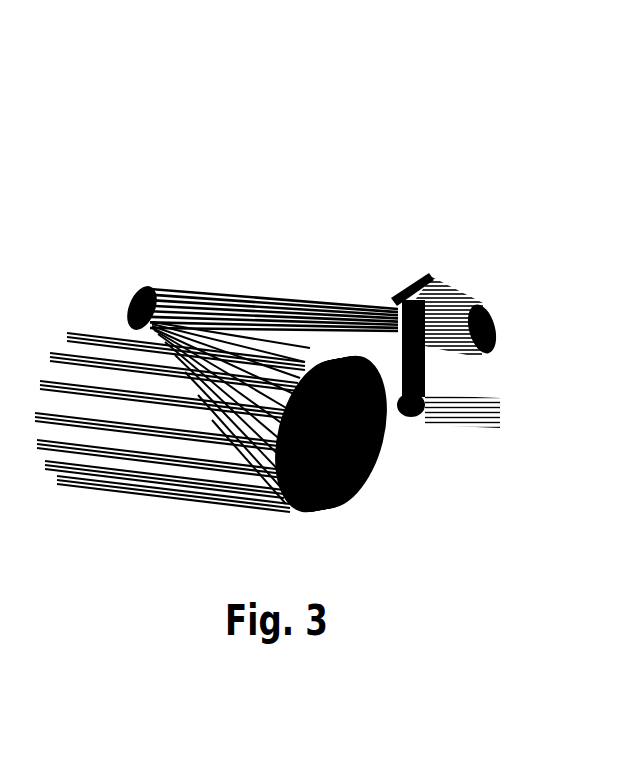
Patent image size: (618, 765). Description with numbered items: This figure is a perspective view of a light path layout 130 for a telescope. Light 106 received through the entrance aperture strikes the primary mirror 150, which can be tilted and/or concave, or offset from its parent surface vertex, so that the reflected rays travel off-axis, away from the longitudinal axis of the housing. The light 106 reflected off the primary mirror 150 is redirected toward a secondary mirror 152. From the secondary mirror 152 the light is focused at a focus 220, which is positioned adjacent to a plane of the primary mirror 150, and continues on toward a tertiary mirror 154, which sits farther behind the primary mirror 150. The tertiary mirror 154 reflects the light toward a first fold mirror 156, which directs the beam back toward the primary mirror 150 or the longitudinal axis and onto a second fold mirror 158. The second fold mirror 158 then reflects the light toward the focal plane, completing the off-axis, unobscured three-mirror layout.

The light path layout 130 is at (305, 146).
The light 106 is at (85, 488).
The primary mirror 150 is at (352, 458).
The secondary mirror 152 is at (137, 292).
The focus 220 is at (358, 293).
The first fold mirror 156 is at (400, 293).
The tertiary mirror 154 is at (492, 323).
The second fold mirror 158 is at (415, 418).